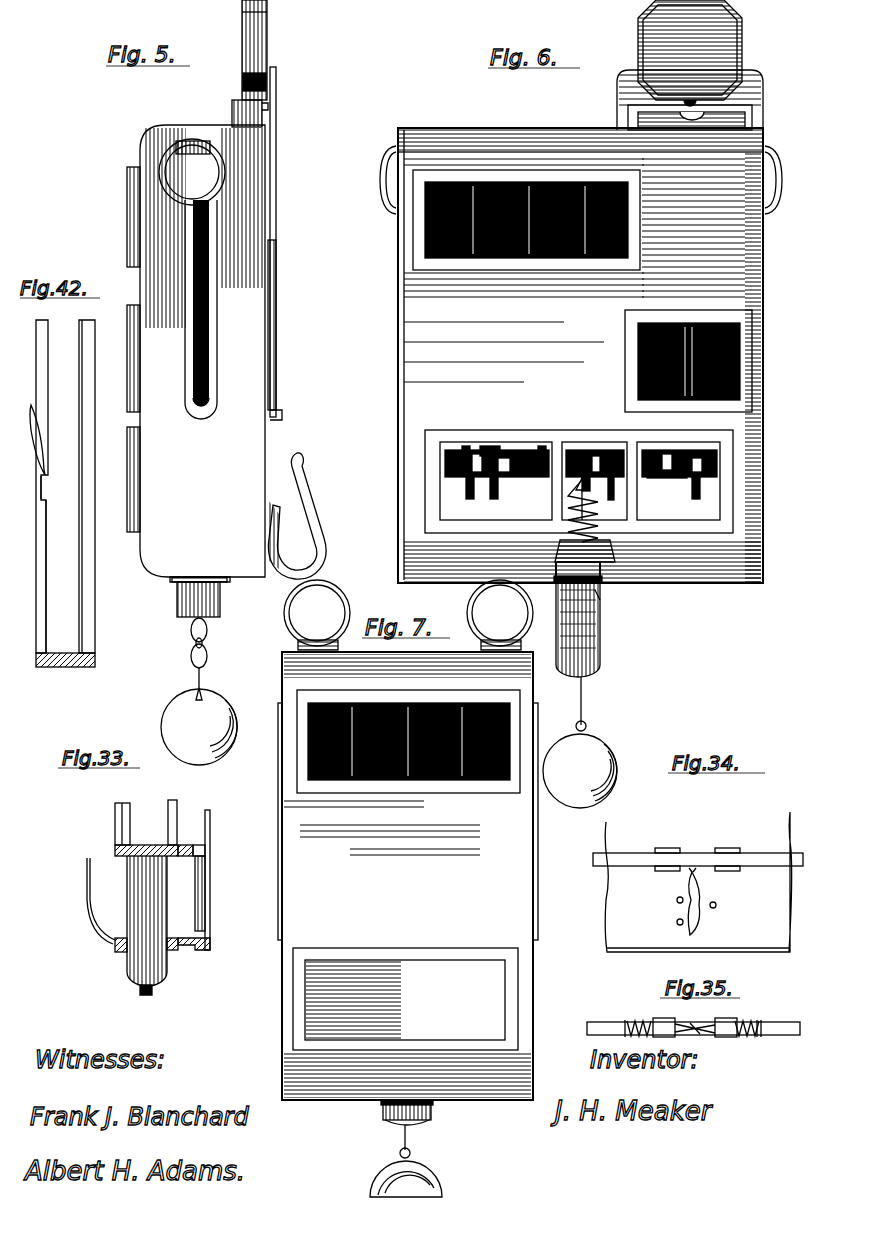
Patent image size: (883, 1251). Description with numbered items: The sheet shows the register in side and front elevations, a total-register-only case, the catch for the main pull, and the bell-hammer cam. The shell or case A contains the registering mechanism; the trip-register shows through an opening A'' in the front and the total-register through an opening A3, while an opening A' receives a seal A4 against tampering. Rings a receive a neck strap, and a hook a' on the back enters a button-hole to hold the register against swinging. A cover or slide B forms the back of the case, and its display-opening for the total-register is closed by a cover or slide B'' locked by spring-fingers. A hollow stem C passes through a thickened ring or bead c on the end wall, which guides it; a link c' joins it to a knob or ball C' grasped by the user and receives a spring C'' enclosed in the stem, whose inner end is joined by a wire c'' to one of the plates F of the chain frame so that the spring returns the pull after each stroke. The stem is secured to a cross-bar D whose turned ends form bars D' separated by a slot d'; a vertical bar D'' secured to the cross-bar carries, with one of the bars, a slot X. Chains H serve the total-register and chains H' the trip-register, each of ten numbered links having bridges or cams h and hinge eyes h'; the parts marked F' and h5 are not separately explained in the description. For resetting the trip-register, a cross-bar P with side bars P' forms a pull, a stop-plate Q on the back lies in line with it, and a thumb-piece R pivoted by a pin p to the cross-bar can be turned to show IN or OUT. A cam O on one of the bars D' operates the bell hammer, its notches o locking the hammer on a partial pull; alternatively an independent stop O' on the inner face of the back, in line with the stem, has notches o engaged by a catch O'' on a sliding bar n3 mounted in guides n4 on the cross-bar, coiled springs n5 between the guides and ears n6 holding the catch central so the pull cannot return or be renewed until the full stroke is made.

In FIG. 5, the thumb-piece R is at (260, 43).
In FIG. 6, the thumb-piece R is at (699, 50).
In FIG. 5, the stop-plate Q is at (282, 243).
In FIG. 6, the stop-plate Q is at (763, 98).
In FIG. 6, the cross-bar P is at (707, 89).
In FIG. 5, the side bars P' is at (226, 110).
In FIG. 6, the side bars P' is at (683, 115).
In FIG. 5, the pin or pivot p is at (245, 97).
In FIG. 6, the pin or pivot p is at (628, 100).
In FIG. 5, the shell or case A is at (202, 351).
In FIG. 6, the shell or case A is at (580, 355).
In FIG. 7, the shell or case A is at (408, 876).
In FIG. 33, the shell or case A is at (88, 901).
In FIG. 5, the opening A' is at (119, 349).
In FIG. 6, the opening A' is at (579, 470).
In FIG. 7, the opening A' is at (426, 999).
In FIG. 5, the opening A'' is at (127, 358).
In FIG. 6, the opening A'' is at (688, 350).
In FIG. 6, the opening A3 is at (526, 183).
In FIG. 7, the opening A3 is at (408, 732).
In FIG. 7, the seal A4 is at (359, 1000).
In FIG. 5, the rings a is at (202, 172).
In FIG. 6, the rings a is at (582, 180).
In FIG. 7, the rings a is at (408, 615).
In FIG. 5, the hook a' is at (303, 516).
In FIG. 5, the cover or slide B is at (234, 327).
In FIG. 33, the cover or slide B is at (202, 880).
In FIG. 34, the cover or slide B is at (706, 882).
In FIG. 5, the cover or slide B'' is at (286, 325).
In FIG. 5, the hollow stem C is at (197, 597).
In FIG. 6, the hollow stem C is at (590, 619).
In FIG. 7, the hollow stem C is at (405, 1117).
In FIG. 33, the hollow stem C is at (161, 925).
In FIG. 5, the ring or bead c is at (199, 579).
In FIG. 6, the ring or bead c is at (596, 593).
In FIG. 7, the ring or bead c is at (407, 1102).
In FIG. 33, the ring or bead c is at (133, 957).
In FIG. 5, the link c' is at (216, 653).
In FIG. 6, the link c' is at (590, 704).
In FIG. 7, the link c' is at (418, 1141).
In FIG. 5, the knob or ball C' is at (209, 717).
In FIG. 6, the knob or ball C' is at (594, 767).
In FIG. 7, the knob or ball C' is at (419, 1179).
In FIG. 5, the spring C'' is at (173, 643).
In FIG. 6, the wire c'' is at (585, 484).
In FIG. 42, the cross-bar D is at (65, 673).
In FIG. 6, the cross-bar D is at (585, 521).
In FIG. 33, the cross-bar D is at (146, 839).
In FIG. 34, the cross-bar D is at (698, 842).
In FIG. 35, the cross-bar D is at (698, 1038).
In FIG. 42, the bars D' is at (77, 486).
In FIG. 33, the bars D' is at (140, 822).
In FIG. 6, the vertical bar D'' is at (661, 573).
In FIG. 42, the slot d' is at (58, 576).
In FIG. 33, the slot d' is at (141, 817).
In FIG. 6, the chains H is at (591, 440).
In FIG. 6, the chains H' is at (672, 443).
In FIG. 6, the bridges or cams h is at (489, 429).
In FIG. 6, the eyes h' is at (503, 422).
In FIG. 35, the pin h5 is at (769, 1010).
In FIG. 6, the plates F is at (576, 496).
In FIG. 6, the pin F' is at (613, 489).
In FIG. 42, the cam O is at (48, 440).
In FIG. 33, the stop O' is at (208, 893).
In FIG. 34, the stop O' is at (722, 897).
In FIG. 33, the catch or projection O'' is at (215, 837).
In FIG. 34, the catch or projection O'' is at (697, 882).
In FIG. 35, the catch or projection O'' is at (709, 1014).
In FIG. 34, the notches or recesses o is at (680, 911).
In FIG. 42, the slot X is at (48, 490).
In FIG. 33, the sliding bar n3 is at (190, 841).
In FIG. 35, the sliding bar n3 is at (695, 1017).
In FIG. 34, the guides n4 is at (696, 851).
In FIG. 35, the guides n4 is at (704, 1011).
In FIG. 35, the coiled spring n5 is at (693, 1016).
In FIG. 35, the ears n6 is at (704, 1017).